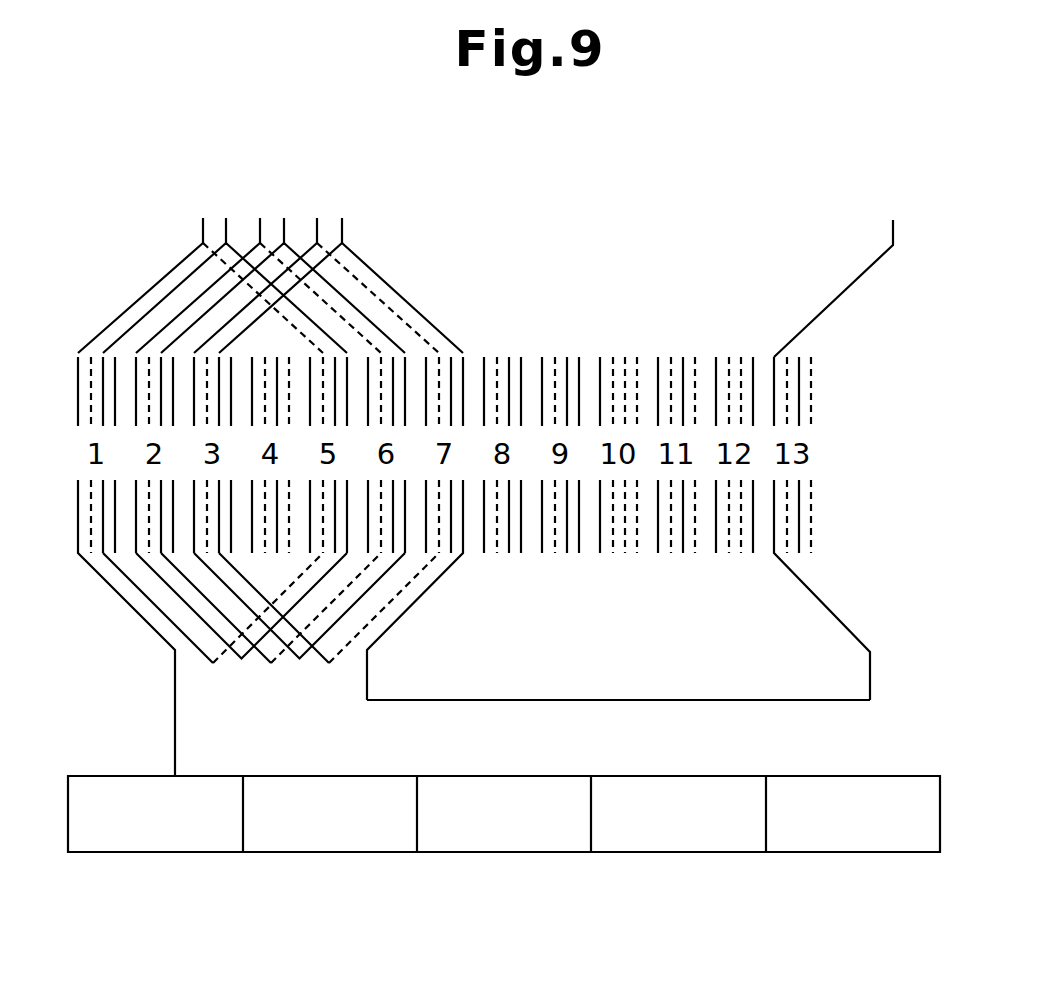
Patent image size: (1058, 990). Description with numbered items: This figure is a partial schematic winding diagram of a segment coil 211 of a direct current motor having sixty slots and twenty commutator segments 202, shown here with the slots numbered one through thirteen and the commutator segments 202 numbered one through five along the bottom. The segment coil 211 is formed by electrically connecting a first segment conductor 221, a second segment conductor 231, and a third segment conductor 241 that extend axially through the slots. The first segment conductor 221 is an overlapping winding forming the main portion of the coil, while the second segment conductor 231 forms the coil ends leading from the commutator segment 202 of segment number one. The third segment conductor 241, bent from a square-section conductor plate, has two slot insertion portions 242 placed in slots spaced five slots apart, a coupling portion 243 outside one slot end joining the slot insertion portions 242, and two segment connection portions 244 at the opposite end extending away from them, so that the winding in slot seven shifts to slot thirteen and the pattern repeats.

The segment coil 211 is at (387, 224).
The first segment conductor 221 is at (187, 277).
The second segment conductor 231 is at (121, 321).
The segment connection portion 244 is at (428, 321).
The slot insertion portion 242 is at (465, 374).
The third segment conductor 241 is at (562, 700).
The coupling portion 243 is at (667, 700).
The commutator segment 202 is at (709, 768).